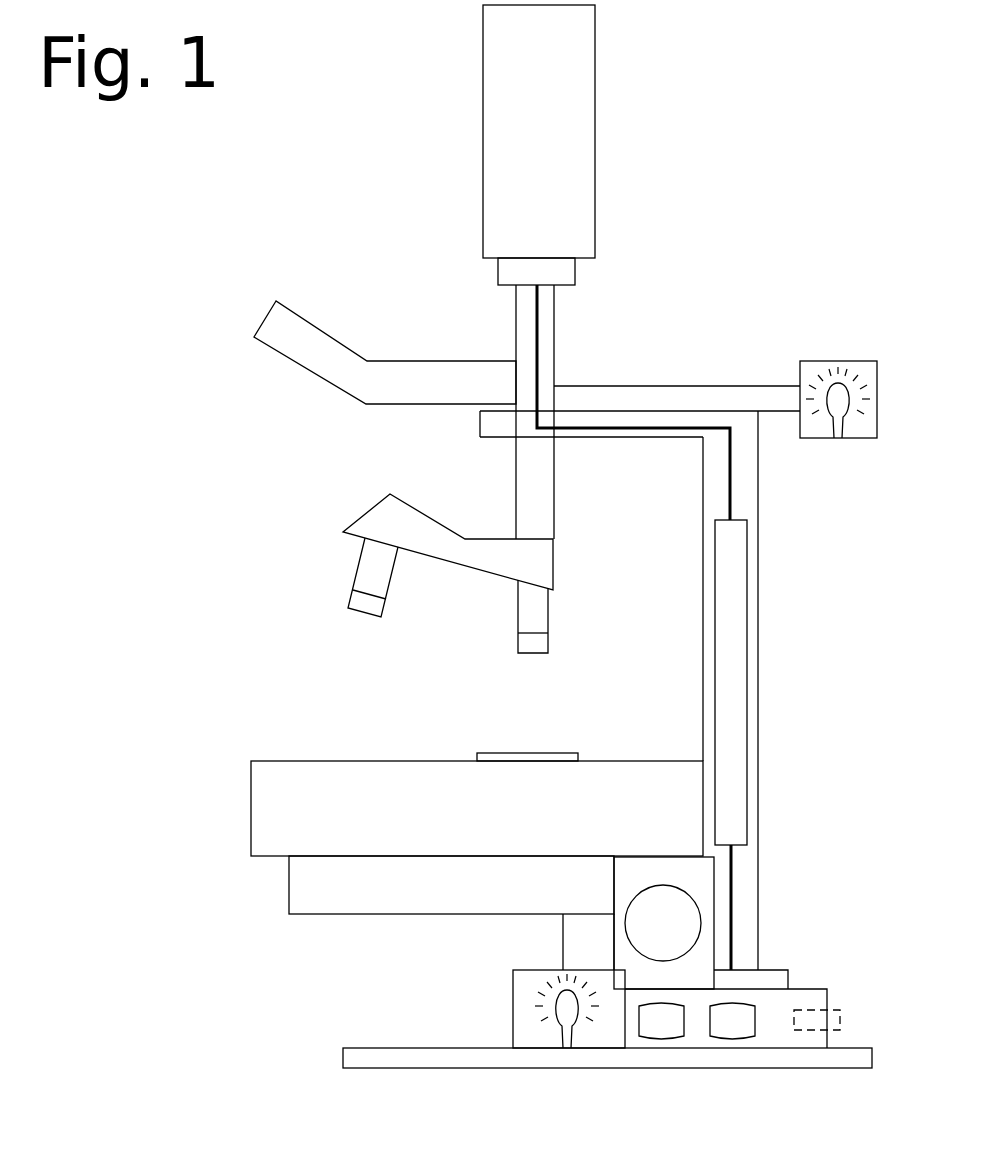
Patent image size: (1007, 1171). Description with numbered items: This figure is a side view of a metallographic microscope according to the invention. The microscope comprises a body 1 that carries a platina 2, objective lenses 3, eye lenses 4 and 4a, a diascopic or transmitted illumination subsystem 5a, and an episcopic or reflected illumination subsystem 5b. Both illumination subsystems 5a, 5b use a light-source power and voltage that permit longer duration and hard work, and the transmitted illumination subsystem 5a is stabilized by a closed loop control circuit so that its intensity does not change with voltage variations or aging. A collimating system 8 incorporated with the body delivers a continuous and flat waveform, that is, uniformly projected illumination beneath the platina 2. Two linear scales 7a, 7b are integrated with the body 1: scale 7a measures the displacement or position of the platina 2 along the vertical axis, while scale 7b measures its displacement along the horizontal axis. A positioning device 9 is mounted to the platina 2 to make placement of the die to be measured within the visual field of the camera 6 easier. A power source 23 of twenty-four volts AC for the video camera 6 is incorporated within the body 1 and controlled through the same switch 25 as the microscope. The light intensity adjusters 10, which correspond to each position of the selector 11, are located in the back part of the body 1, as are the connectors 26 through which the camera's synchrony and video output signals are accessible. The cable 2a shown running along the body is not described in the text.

The body 1 is at (733, 897).
The platina 2 is at (250, 818).
The cable 2a is at (733, 477).
The objective lenses 3 is at (515, 646).
The eye lens 4 is at (300, 363).
The eye lens 4a is at (510, 287).
The diascopic or transmitted illumination subsystem 5a is at (525, 1009).
The episcopic or reflected illumination subsystem 5b is at (830, 380).
The camera 6 is at (595, 150).
The linear scale 7a is at (740, 672).
The linear scale 7b is at (288, 893).
The collimating system 8 is at (582, 940).
The positioning device 9 is at (502, 749).
The light intensity adjusters 10 is at (833, 1018).
The selector 11 is at (662, 1035).
The power source 23 is at (638, 883).
The switch 25 is at (670, 903).
The connectors 26 is at (733, 928).